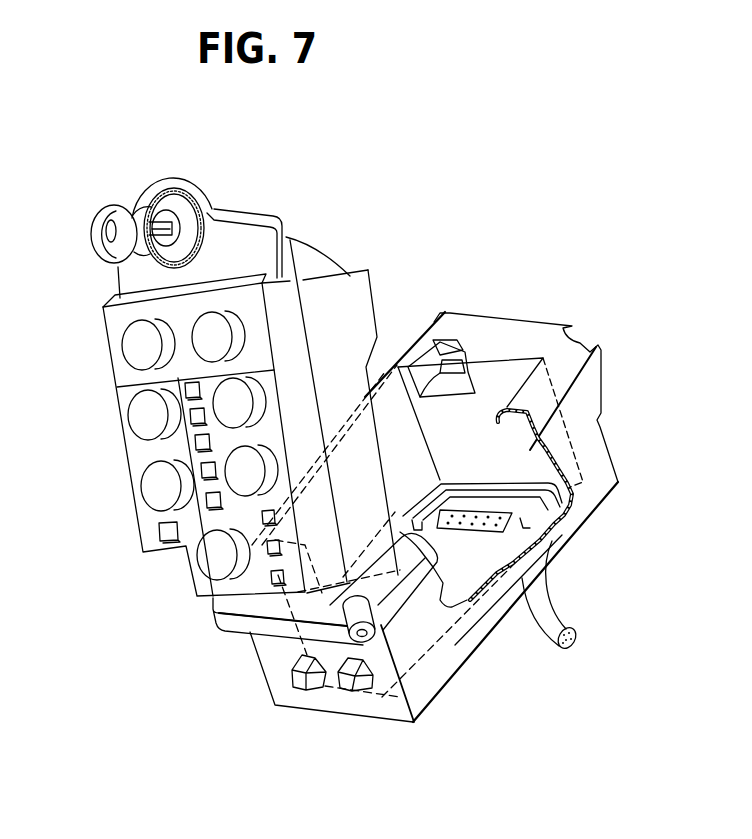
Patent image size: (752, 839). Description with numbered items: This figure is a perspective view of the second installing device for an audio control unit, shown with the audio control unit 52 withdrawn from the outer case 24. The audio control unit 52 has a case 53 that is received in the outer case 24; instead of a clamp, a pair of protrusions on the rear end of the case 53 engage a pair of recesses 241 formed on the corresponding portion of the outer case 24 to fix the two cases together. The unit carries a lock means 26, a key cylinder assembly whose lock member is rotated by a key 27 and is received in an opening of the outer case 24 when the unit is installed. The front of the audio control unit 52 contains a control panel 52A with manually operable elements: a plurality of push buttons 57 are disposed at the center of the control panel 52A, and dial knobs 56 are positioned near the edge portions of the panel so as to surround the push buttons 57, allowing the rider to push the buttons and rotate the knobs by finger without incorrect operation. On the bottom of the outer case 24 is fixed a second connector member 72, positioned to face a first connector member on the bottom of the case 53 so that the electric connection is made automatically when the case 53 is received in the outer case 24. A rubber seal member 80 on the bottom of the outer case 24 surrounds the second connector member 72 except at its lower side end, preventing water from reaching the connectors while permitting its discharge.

The outer case 24 is at (497, 325).
The lock means 26 is at (190, 218).
The key 27 is at (98, 259).
The audio control unit 52 is at (92, 363).
The control panel 52A is at (122, 403).
The case 53 is at (352, 282).
The dial knobs 56 is at (152, 495).
The push buttons 57 is at (197, 443).
The second connector member 72 is at (482, 532).
The seal member 80 is at (574, 503).
The recesses 241 is at (350, 690).